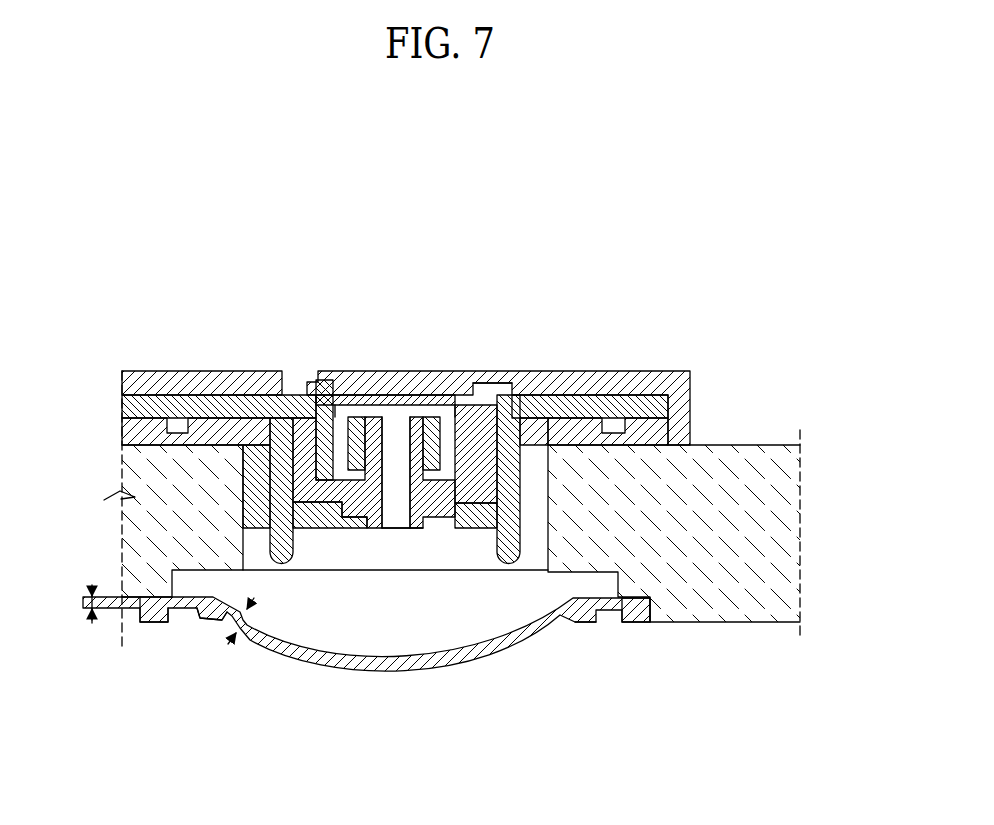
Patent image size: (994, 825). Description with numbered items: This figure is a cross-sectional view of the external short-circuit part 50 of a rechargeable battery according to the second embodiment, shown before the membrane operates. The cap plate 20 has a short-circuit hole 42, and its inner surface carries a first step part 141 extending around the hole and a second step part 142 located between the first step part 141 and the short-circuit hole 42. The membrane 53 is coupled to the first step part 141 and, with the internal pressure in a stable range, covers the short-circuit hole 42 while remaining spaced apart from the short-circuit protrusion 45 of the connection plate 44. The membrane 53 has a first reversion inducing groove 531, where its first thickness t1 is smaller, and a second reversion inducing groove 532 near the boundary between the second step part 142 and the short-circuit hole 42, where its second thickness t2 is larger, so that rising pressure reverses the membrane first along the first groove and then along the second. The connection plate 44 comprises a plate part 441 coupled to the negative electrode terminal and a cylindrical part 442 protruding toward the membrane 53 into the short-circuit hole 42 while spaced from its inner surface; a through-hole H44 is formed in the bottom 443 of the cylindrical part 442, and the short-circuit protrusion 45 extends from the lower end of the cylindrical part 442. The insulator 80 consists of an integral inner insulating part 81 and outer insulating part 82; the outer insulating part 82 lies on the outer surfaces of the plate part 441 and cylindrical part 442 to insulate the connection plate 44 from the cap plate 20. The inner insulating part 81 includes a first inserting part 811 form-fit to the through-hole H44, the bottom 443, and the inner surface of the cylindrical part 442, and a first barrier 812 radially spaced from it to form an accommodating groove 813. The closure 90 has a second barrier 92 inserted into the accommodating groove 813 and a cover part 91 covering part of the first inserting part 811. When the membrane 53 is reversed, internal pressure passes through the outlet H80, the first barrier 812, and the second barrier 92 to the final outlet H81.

The cap plate 20 is at (730, 597).
The short-circuit hole 42 is at (538, 556).
The connection plate 44 is at (392, 494).
The plate part 441 is at (535, 418).
The cylindrical part 442 is at (550, 430).
The bottom 443 is at (470, 517).
The short-circuit protrusion 45 is at (508, 560).
The external short-circuit part 50 is at (468, 484).
The membrane 53 is at (366, 679).
The first reversion inducing groove 531 is at (180, 610).
The second reversion inducing groove 532 is at (230, 614).
The insulator 80 is at (468, 389).
The inner insulating part 81 is at (477, 389).
The first inserting part 811 is at (315, 473).
The first barrier 812 is at (365, 422).
The accommodating groove 813 is at (305, 415).
The outer insulating part 82 is at (447, 337).
The closure 90 is at (402, 363).
The cover part 91 is at (413, 400).
The second barrier 92 is at (463, 440).
The first step part 141 is at (645, 624).
The second step part 142 is at (605, 608).
The through-hole H44 is at (414, 528).
The outlet H80 is at (393, 512).
The final outlet H81 is at (497, 386).
The first thickness t1 is at (77, 604).
The second thickness t2 is at (254, 634).